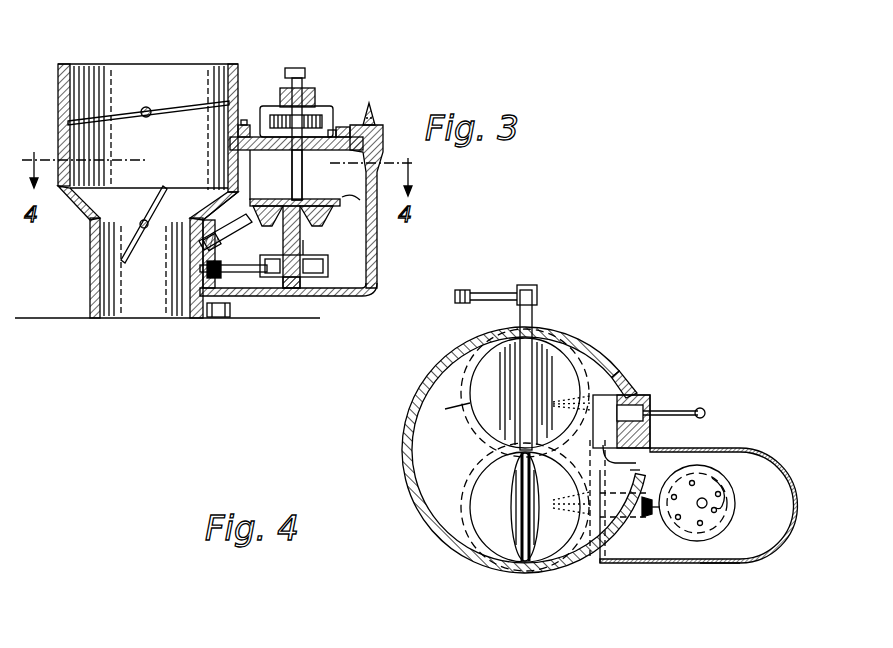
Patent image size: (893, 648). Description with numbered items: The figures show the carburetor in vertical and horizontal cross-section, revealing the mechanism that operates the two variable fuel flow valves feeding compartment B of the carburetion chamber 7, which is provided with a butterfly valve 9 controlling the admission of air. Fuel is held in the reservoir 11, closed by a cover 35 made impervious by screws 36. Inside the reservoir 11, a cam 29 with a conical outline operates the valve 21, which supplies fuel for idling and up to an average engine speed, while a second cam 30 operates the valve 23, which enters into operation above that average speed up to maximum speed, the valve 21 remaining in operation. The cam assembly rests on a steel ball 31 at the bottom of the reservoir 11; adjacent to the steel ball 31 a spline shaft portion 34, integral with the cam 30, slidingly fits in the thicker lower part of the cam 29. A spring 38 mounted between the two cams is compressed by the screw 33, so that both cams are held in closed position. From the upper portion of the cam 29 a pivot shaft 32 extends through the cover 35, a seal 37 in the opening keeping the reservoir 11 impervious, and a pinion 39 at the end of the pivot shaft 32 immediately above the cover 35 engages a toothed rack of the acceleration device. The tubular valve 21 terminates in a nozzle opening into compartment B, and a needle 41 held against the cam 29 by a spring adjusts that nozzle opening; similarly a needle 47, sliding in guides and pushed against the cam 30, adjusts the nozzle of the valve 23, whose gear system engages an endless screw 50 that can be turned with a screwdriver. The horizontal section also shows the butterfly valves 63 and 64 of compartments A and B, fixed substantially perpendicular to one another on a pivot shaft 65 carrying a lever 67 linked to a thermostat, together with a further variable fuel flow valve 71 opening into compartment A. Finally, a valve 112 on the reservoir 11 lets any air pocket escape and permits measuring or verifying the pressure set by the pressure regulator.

In FIG. 3, the carburetion chamber 7 is at (108, 90).
In FIG. 4, the carburetion chamber 7 is at (430, 438).
In FIG. 3, the butterfly valve 9 is at (175, 107).
In FIG. 3, the reservoir 11 is at (352, 278).
In FIG. 4, the reservoir 11 is at (700, 456).
In FIG. 3, the valve 21 is at (214, 189).
In FIG. 4, the valve 21 is at (645, 516).
In FIG. 3, the valve 23 is at (240, 292).
In FIG. 4, the valve 23 is at (640, 518).
In FIG. 3, the cam 29 is at (342, 197).
In FIG. 4, the cam 29 is at (697, 543).
In FIG. 3, the second cam 30 is at (333, 267).
In FIG. 4, the second cam 30 is at (717, 558).
In FIG. 3, the steel ball 31 is at (282, 279).
In FIG. 3, the pivot shaft 32 is at (302, 173).
In FIG. 4, the pivot shaft 32 is at (704, 499).
In FIG. 3, the screw 33 is at (294, 67).
In FIG. 3, the spline shaft portion 34 is at (303, 247).
In FIG. 3, the cover 35 is at (338, 130).
In FIG. 3, the screws 36 is at (246, 128).
In FIG. 3, the seal 37 is at (290, 152).
In FIG. 3, the spring 38 is at (302, 243).
In FIG. 3, the pinion 39 is at (306, 112).
In FIG. 3, the needle 41 is at (258, 223).
In FIG. 3, the needle 47 is at (240, 290).
In FIG. 3, the endless screw 50 is at (195, 291).
In FIG. 4, the butterfly valve 63 is at (553, 372).
In FIG. 3, the butterfly valve 64 is at (126, 250).
In FIG. 4, the butterfly valve 64 is at (540, 540).
In FIG. 4, the pivot shaft 65 is at (533, 308).
In FIG. 4, the lever 67 is at (498, 288).
In FIG. 4, the valve 71 is at (613, 378).
In FIG. 3, the valve 112 is at (373, 116).